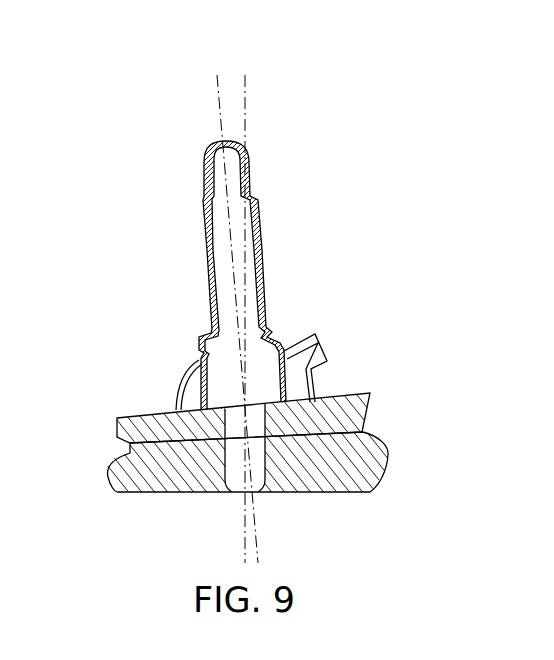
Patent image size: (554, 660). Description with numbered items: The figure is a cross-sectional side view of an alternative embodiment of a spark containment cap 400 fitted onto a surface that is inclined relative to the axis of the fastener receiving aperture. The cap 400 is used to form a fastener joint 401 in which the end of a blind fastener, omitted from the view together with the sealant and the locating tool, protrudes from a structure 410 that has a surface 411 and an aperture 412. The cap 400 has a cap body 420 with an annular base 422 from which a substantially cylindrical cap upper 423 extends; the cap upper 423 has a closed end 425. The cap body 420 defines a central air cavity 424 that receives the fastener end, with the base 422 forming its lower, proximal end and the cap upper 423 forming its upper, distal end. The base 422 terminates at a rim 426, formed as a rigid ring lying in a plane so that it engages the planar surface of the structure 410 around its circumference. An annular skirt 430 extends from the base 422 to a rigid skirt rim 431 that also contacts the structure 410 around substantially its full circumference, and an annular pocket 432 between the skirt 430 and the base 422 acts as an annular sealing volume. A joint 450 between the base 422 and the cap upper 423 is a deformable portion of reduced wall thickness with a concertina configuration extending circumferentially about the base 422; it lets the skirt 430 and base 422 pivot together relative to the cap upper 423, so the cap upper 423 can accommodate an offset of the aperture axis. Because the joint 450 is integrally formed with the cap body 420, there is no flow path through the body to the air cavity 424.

The spark containment cap 400 is at (328, 170).
The fastener joint 401 is at (328, 87).
The structure 410 is at (350, 443).
The surface 411 is at (362, 395).
The aperture 412 is at (237, 485).
The cap body 420 is at (206, 256).
The annular base 422 is at (288, 372).
The cap upper 423 is at (261, 254).
The central air cavity 424 is at (221, 306).
The closed end 425 is at (206, 155).
The rim 426 is at (241, 169).
The annular skirt 430 is at (178, 390).
The skirt rim 431 is at (178, 408).
The annular pocket 432 is at (297, 394).
The joint 450 is at (199, 353).